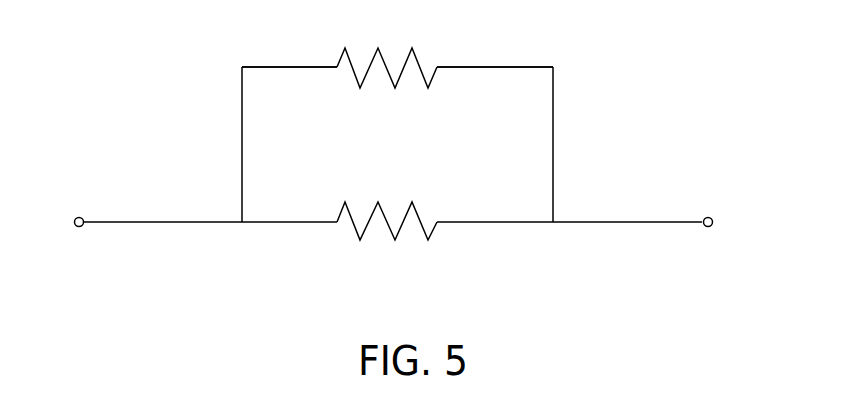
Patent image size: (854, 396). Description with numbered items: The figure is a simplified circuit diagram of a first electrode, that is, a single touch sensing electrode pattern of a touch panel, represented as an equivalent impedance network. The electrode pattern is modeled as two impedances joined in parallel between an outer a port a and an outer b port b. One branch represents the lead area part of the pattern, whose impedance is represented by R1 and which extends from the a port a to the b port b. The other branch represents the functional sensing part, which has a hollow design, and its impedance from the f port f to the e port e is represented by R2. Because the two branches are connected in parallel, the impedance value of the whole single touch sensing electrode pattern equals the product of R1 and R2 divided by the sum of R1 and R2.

The impedance of the lead area part R1 is at (387, 44).
The impedance of the functional sensing part R2 is at (387, 200).
The a port a is at (63, 216).
The b port b is at (729, 221).
The e port e is at (495, 44).
The f port f is at (289, 45).